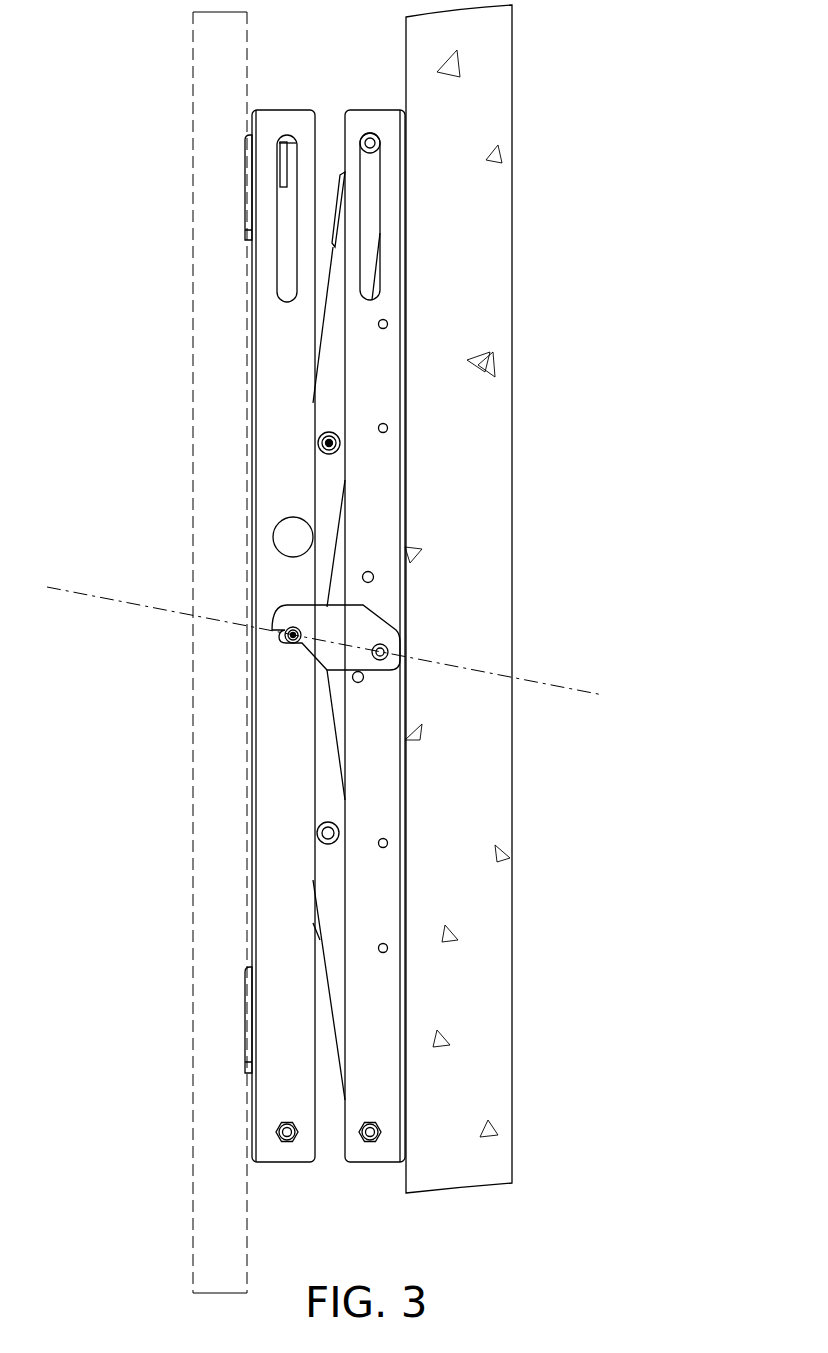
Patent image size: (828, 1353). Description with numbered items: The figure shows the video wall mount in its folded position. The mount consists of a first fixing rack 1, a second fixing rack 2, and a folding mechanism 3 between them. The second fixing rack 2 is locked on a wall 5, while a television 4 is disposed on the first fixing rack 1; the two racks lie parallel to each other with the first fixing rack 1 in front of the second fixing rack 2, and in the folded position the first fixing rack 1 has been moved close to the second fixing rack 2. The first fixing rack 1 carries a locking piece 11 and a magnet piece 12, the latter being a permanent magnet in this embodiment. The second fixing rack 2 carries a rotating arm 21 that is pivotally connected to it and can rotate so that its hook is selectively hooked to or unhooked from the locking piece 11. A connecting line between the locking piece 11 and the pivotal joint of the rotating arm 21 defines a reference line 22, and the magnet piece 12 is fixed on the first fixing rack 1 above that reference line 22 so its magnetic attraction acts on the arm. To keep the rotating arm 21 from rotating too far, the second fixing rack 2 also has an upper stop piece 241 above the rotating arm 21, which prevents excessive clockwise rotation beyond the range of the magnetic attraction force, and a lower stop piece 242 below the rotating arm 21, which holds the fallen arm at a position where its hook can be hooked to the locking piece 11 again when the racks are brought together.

The first fixing rack 1 is at (287, 120).
The second fixing rack 2 is at (367, 120).
The folding mechanism 3 is at (335, 377).
The television 4 is at (193, 75).
The wall 5 is at (478, 88).
The locking piece 11 is at (286, 636).
The magnet piece 12 is at (283, 532).
The rotating arm 21 is at (332, 657).
The reference line 22 is at (559, 685).
The upper stop piece 241 is at (374, 576).
The lower stop piece 242 is at (357, 683).